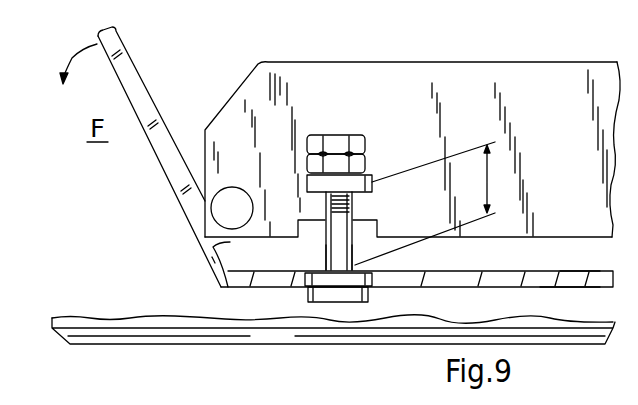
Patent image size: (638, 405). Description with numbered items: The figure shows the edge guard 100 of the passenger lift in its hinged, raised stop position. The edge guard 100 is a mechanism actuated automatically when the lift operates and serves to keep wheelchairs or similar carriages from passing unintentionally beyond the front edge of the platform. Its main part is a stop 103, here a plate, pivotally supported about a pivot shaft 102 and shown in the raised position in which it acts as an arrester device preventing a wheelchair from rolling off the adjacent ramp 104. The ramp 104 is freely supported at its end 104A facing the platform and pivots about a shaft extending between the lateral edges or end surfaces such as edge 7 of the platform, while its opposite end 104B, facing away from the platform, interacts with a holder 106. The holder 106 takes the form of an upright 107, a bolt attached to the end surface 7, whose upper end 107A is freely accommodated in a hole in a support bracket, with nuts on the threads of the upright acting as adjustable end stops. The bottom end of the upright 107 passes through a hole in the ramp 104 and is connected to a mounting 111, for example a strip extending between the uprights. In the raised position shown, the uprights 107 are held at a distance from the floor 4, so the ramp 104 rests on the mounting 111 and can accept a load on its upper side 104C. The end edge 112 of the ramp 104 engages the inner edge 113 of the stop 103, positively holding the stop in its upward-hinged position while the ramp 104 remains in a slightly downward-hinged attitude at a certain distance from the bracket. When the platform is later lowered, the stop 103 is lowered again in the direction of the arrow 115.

The floor 4 is at (116, 318).
The lateral edge 7 is at (404, 80).
The edge guard 100 is at (174, 188).
The pivot shaft 102 is at (230, 193).
The stop 103 is at (140, 93).
The ramp 104 is at (509, 272).
The ramp end facing towards the platform 104A is at (562, 284).
The ramp end facing away from the platform 104B is at (252, 283).
The upper side of the ramp 104C is at (569, 270).
The holder 106 is at (323, 243).
The upright 107 is at (357, 248).
The upper end of the upright 107A is at (323, 203).
The mounting 111 is at (320, 298).
The end edge of the ramp 112 is at (222, 293).
The inner edge of the stop 113 is at (215, 276).
The arrow 115 is at (72, 58).